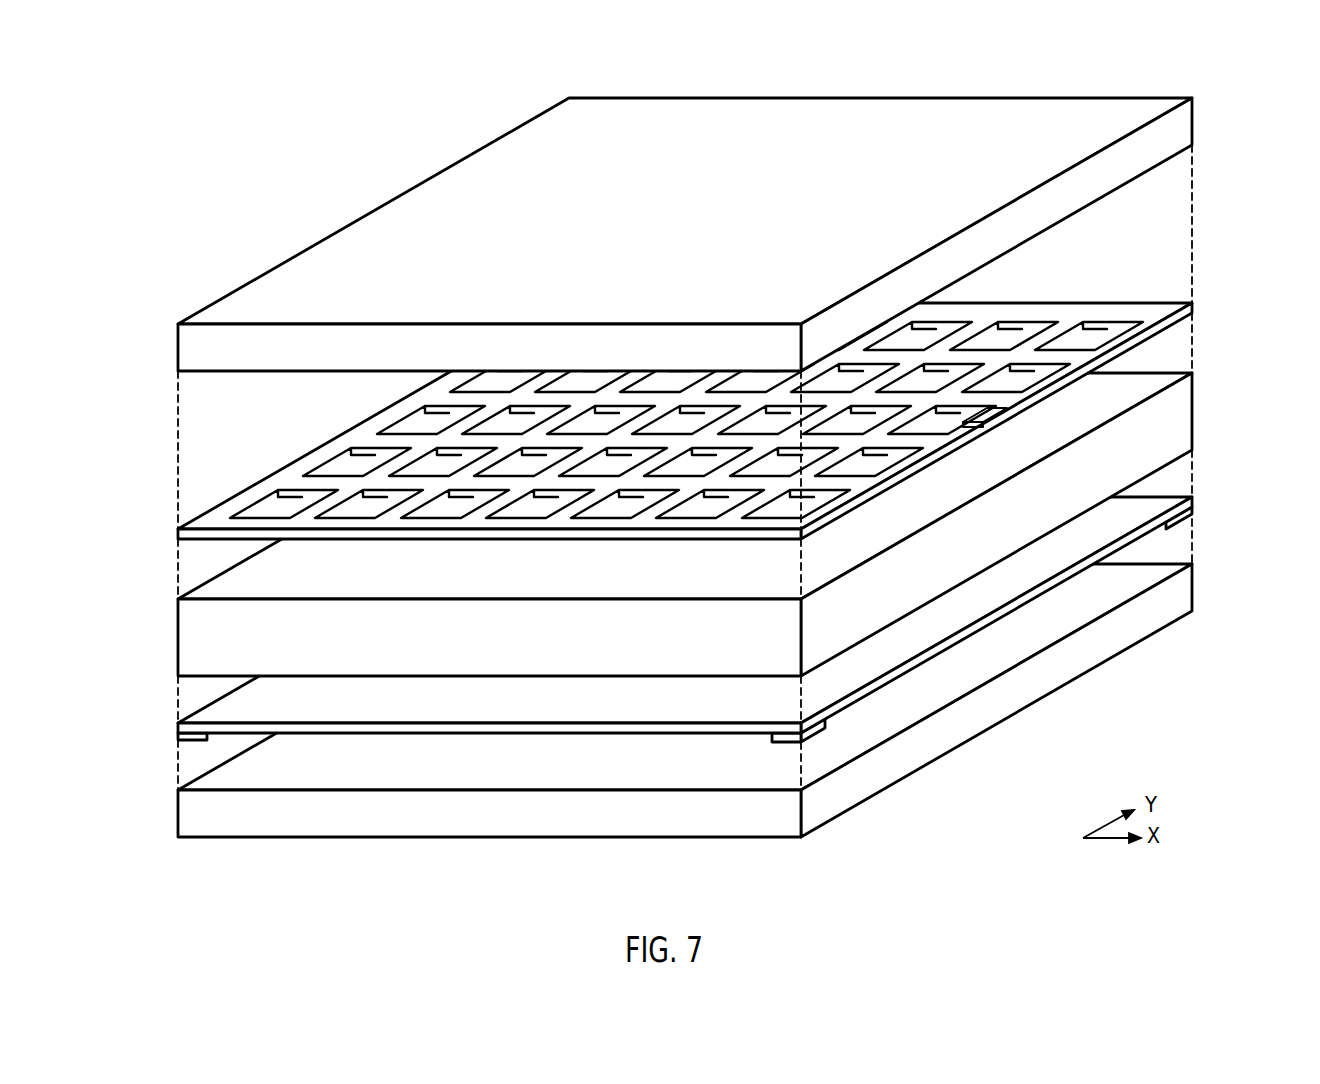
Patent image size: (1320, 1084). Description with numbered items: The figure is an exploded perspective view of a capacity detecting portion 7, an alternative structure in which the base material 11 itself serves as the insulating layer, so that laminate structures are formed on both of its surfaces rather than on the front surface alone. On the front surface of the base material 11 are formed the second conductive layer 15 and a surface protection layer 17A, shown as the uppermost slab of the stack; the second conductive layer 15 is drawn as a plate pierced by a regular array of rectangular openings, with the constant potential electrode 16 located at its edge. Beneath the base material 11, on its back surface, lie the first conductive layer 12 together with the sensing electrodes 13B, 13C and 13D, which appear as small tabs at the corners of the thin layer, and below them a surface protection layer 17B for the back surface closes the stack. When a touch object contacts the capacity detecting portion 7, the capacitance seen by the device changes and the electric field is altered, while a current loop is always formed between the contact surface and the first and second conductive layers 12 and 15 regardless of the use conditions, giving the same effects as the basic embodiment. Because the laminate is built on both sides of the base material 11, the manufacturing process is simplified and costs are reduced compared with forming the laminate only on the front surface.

The capacity detecting portion 7 is at (708, 472).
The surface protection layer 17A is at (1130, 120).
The second conductive layer 15 is at (1142, 327).
The base material 11 is at (1132, 398).
The sensing electrode 13D is at (1185, 515).
The first conductive layer 12 is at (1098, 535).
The surface protection layer for the back surface 17B is at (1128, 582).
The constant potential electrode 16 is at (990, 412).
The sensing electrode 13B is at (195, 737).
The sensing electrode 13C is at (790, 743).